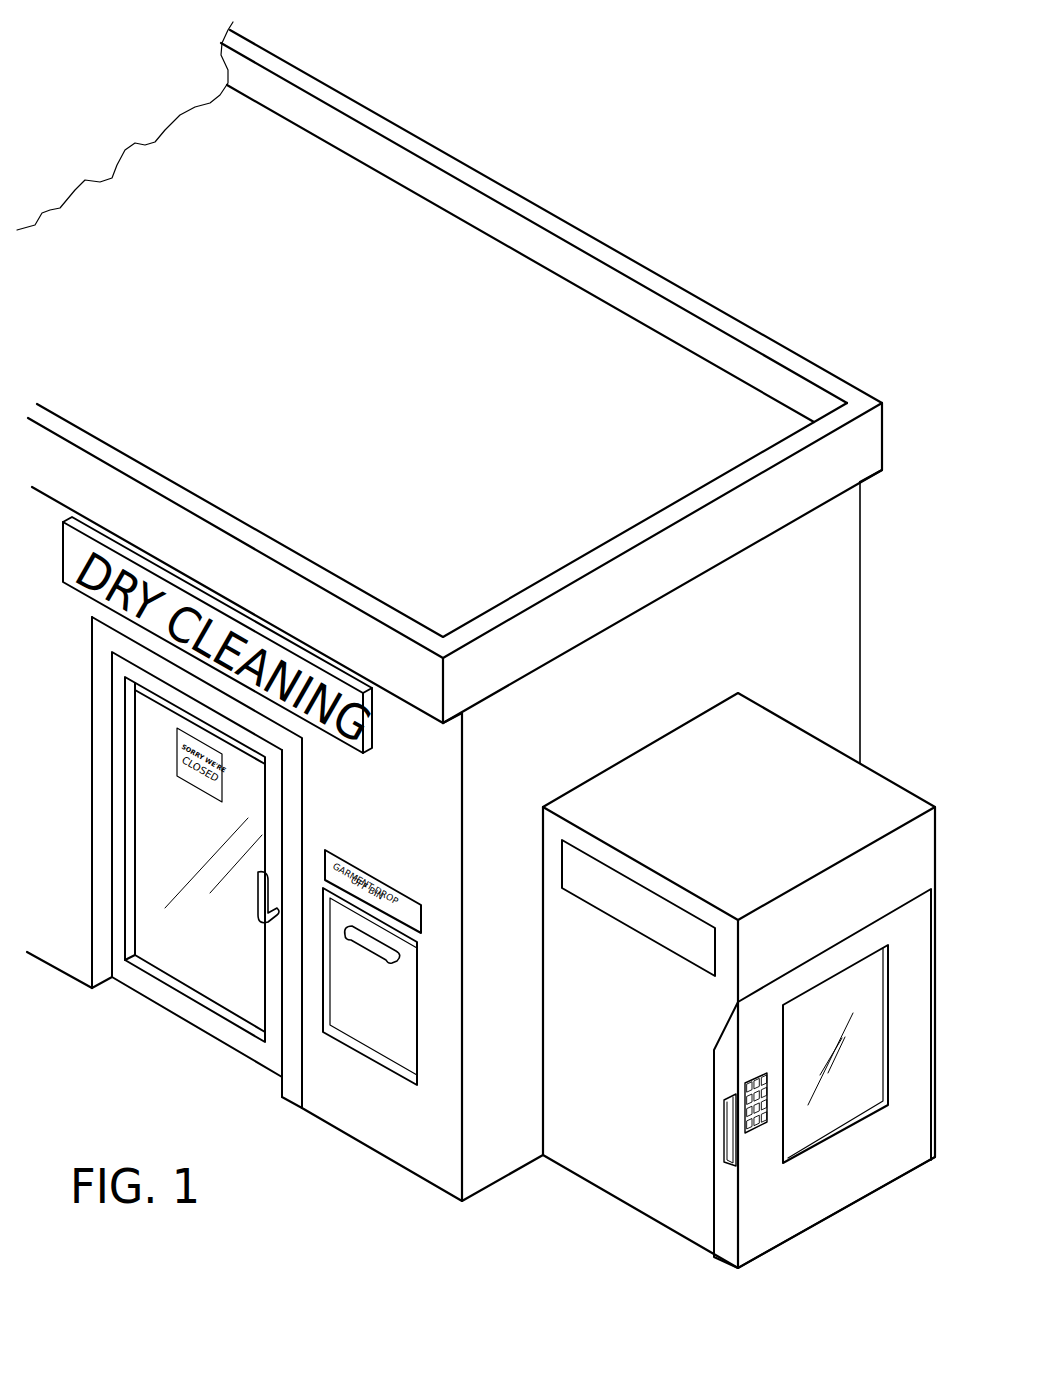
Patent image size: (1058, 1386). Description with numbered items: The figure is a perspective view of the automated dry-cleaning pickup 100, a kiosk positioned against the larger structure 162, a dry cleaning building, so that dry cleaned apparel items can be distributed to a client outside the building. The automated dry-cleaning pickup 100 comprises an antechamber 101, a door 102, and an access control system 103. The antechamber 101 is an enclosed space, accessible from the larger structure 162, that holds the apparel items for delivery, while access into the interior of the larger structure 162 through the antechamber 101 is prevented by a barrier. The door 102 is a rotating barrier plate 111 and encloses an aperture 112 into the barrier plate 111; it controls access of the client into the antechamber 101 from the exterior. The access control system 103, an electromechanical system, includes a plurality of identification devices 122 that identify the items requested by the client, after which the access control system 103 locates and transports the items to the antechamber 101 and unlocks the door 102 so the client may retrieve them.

The automated dry-cleaning pickup 100 is at (878, 756).
The antechamber 101 is at (805, 773).
The door 102 is at (908, 1040).
The access control system 103 is at (760, 1132).
The barrier plate 111 is at (807, 1205).
The aperture 112 is at (907, 903).
The plurality of identification devices 122 is at (754, 1070).
The larger structure 162 is at (818, 607).